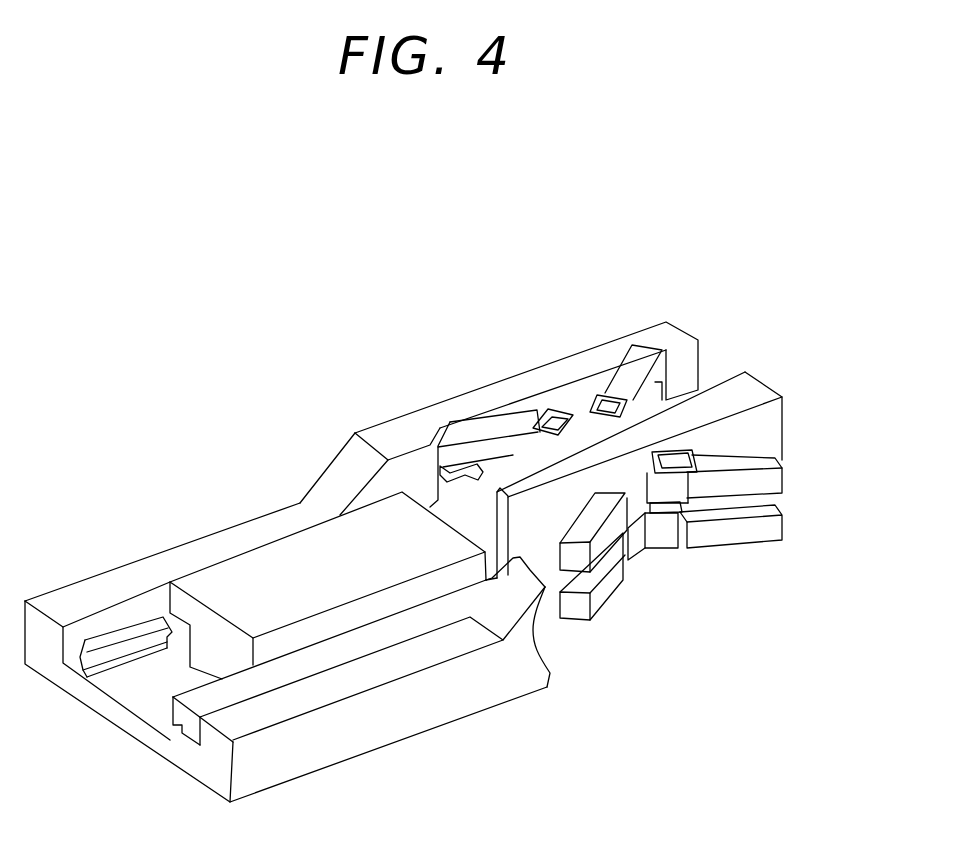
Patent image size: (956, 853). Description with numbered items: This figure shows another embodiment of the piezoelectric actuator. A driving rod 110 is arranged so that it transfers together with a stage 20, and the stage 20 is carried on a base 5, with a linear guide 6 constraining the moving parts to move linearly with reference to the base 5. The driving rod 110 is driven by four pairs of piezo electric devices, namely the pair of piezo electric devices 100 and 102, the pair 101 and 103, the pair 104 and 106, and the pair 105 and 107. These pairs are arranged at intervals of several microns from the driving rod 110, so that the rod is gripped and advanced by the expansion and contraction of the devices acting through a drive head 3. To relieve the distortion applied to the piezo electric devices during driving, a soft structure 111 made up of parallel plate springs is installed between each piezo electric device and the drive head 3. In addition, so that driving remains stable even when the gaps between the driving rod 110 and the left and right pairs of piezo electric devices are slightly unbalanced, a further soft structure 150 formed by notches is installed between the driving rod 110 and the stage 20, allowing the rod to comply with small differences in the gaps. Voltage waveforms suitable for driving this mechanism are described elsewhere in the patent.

The drive head 3 is at (580, 410).
The base 5 is at (167, 560).
The linear guide 6 is at (148, 637).
The stage 20 is at (288, 547).
The piezo electric device 100 is at (477, 438).
The piezo electric device 101 is at (572, 568).
The piezo electric device 102 is at (638, 352).
The piezo electric device 103 is at (765, 483).
The piezo electric device 104 is at (395, 415).
The piezo electric device 105 is at (605, 590).
The piezo electric device 106 is at (702, 378).
The piezo electric device 107 is at (753, 540).
The driving rod 110 is at (752, 388).
The soft structure 111 is at (665, 540).
The soft structure 150 is at (510, 473).